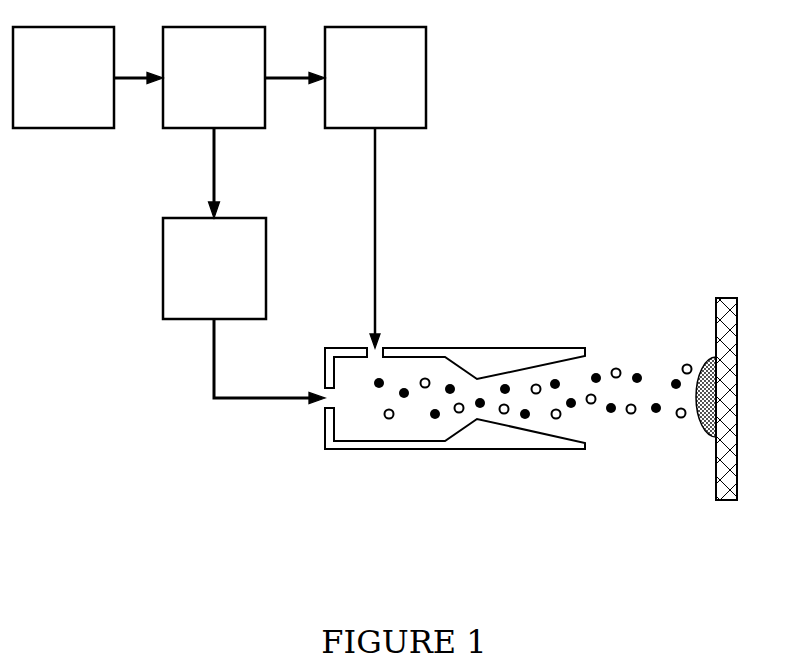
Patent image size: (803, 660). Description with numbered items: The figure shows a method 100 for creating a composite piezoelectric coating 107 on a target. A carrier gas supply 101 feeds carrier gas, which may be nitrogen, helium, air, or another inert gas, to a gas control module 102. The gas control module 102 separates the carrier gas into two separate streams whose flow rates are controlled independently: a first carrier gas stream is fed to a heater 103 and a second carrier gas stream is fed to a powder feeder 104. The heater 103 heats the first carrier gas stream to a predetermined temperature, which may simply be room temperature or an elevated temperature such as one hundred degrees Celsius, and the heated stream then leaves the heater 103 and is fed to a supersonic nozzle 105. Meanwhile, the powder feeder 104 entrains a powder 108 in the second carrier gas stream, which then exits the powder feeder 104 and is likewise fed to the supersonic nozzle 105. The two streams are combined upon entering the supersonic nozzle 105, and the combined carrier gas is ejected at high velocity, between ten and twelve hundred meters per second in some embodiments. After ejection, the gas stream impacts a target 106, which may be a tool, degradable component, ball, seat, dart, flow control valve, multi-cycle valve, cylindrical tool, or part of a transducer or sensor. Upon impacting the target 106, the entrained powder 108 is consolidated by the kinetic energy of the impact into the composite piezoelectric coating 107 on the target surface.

The method 100 is at (124, 408).
The carrier gas supply 101 is at (63, 77).
The gas control module 102 is at (214, 77).
The heater 103 is at (214, 268).
The powder feeder 104 is at (375, 77).
The supersonic nozzle 105 is at (511, 336).
The target 106 is at (731, 283).
The composite piezoelectric coating 107 is at (703, 345).
The powder 108 is at (592, 425).